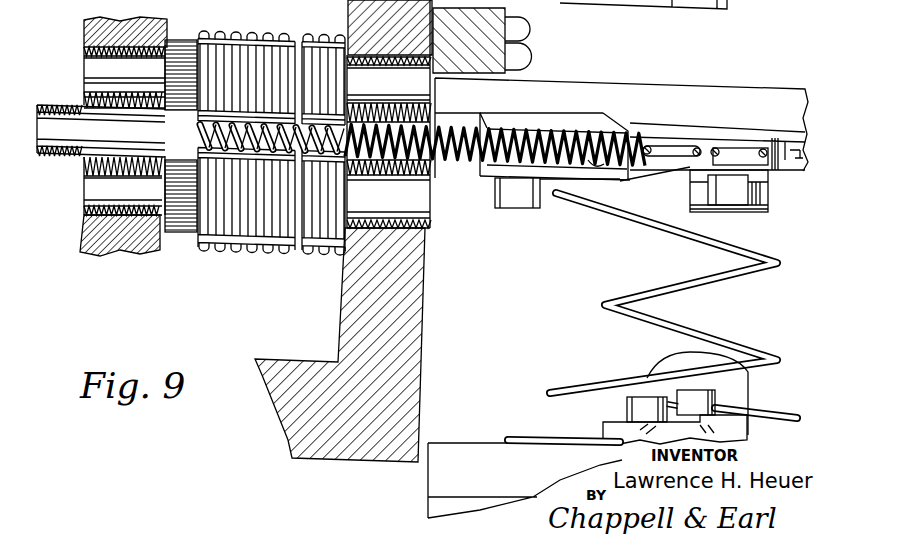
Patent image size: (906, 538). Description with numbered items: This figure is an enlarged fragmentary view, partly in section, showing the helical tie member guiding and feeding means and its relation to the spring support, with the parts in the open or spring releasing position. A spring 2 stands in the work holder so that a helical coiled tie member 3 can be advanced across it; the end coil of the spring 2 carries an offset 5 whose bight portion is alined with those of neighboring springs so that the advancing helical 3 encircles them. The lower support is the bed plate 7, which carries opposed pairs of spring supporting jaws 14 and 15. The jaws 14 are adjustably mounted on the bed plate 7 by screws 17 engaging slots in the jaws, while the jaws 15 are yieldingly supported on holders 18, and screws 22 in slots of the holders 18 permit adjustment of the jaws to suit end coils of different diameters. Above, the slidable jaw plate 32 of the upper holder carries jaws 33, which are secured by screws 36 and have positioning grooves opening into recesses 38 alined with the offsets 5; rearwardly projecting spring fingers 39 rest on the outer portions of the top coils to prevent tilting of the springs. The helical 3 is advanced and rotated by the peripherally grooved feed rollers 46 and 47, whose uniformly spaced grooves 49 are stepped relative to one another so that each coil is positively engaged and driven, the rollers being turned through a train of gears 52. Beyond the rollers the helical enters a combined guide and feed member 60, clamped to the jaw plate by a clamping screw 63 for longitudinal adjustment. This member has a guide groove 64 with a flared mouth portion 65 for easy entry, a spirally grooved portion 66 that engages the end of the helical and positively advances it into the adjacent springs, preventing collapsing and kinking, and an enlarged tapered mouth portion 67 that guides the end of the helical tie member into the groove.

The springs 2 is at (647, 228).
The helical coiled tie member 3 is at (464, 152).
The offsets 5 is at (715, 150).
The bed plate 7 is at (466, 460).
The jaws 14 is at (615, 430).
The jaws 15 is at (227, 10).
The screws 17 is at (640, 400).
The holders 18 is at (740, 423).
The screws 22 is at (715, 396).
The jaw plate 32 is at (652, 95).
The jaws 33 is at (663, 163).
The screws 36 is at (750, 192).
The recesses 38 is at (748, 148).
The spring fingers 39 is at (763, 207).
The feed roller 46 is at (263, 251).
The feed roller 47 is at (265, 35).
The grooves 49 is at (317, 36).
The train of gears 52 is at (173, 162).
The guide and feed member 60 is at (550, 180).
The clamping screws 63 is at (513, 196).
The guide grooves 64 is at (559, 130).
The flared mouth portions 65 is at (488, 126).
The spirally grooved portions 66 is at (606, 128).
The enlarged tapered mouth portions 67 is at (593, 168).